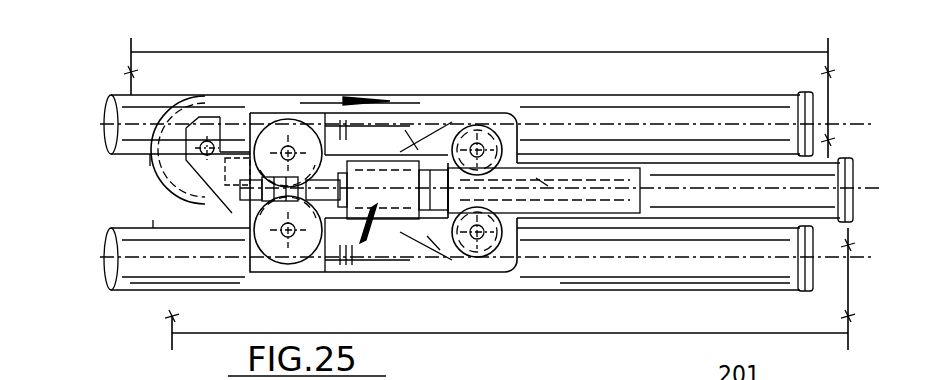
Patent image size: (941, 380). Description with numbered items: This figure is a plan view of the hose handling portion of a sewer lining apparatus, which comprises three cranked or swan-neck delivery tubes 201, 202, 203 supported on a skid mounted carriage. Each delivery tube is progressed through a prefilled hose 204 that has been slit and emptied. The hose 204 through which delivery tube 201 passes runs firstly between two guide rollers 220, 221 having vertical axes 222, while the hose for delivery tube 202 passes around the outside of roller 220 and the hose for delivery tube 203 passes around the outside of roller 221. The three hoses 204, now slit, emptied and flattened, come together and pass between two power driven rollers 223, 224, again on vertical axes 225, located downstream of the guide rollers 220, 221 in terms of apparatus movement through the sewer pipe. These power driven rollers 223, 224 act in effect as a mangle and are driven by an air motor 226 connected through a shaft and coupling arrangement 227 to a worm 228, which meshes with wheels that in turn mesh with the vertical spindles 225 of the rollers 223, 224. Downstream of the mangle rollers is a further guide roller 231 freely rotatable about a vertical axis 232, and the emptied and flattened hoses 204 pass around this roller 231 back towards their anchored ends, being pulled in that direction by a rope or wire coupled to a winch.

The delivery tube 201 is at (855, 166).
The delivery tube 202 is at (782, 115).
The delivery tube 203 is at (813, 278).
The prefilled hose 204 is at (410, 140).
The guide roller 220 is at (490, 128).
The guide roller 221 is at (480, 234).
The vertical axis 222 is at (465, 125).
The power driven roller 223 is at (300, 133).
The power driven roller 224 is at (295, 250).
The vertical axis 225 is at (286, 149).
The air motor 226 is at (620, 218).
The shaft and coupling arrangement 227 is at (363, 243).
The worm 228 is at (231, 214).
The guide roller 231 is at (187, 103).
The vertical axis 232 is at (203, 151).